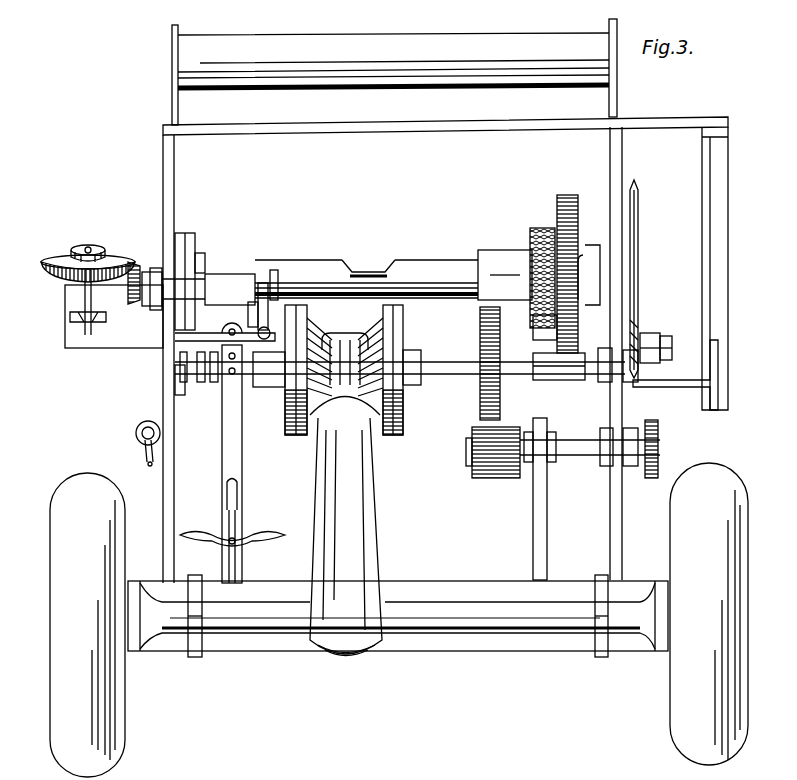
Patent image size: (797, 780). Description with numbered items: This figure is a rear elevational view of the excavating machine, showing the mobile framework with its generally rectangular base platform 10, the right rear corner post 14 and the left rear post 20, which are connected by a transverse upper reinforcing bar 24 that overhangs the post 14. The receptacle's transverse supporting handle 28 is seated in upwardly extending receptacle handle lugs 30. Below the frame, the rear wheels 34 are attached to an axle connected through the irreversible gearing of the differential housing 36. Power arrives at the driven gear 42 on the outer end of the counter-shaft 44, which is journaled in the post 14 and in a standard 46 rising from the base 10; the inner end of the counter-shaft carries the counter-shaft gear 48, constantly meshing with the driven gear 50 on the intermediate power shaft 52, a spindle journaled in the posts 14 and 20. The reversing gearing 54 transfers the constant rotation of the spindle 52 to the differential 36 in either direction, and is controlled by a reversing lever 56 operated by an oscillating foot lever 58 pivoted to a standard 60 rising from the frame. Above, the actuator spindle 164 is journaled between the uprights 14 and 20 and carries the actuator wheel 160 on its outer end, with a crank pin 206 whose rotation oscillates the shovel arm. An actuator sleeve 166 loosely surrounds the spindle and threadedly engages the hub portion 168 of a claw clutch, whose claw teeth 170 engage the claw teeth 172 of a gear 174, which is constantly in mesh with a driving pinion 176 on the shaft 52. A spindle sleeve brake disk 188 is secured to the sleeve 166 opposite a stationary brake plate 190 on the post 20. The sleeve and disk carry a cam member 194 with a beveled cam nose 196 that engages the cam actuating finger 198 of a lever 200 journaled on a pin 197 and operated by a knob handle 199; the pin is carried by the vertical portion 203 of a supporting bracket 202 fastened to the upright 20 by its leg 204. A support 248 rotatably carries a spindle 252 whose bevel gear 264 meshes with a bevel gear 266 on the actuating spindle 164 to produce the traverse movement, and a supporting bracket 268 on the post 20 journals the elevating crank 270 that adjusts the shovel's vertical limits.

The base platform 10 is at (565, 640).
The rear corner post 14 is at (622, 162).
The rear post 20 is at (175, 178).
The transverse upper reinforcing bar 24 is at (666, 121).
The transverse supporting handle 28 is at (348, 48).
The receptacle handle lugs 30 is at (172, 102).
The rear wheels 34 is at (716, 478).
The differential housing 36 is at (355, 652).
The driven gear 42 is at (660, 442).
The counter-shaft 44 is at (573, 460).
The standard 46 is at (535, 500).
The counter-shaft gear 48 is at (488, 470).
The driven gear 50 is at (480, 405).
The intermediate power shaft 52 is at (452, 360).
The reversing gearing 54 is at (305, 438).
The reversing lever 56 is at (228, 420).
The oscillating foot lever 58 is at (250, 530).
The standard 60 is at (238, 560).
The actuator wheel 160 is at (640, 236).
The actuator spindle 164 is at (366, 275).
The actuator sleeve 166 is at (320, 262).
The hub portion 168 is at (483, 268).
The claw teeth 170 is at (538, 240).
The claw teeth 172 is at (552, 325).
The gear 174 is at (558, 206).
The driving pinion 176 is at (560, 381).
The spindle sleeve brake disk 188 is at (198, 250).
The stationary brake plate 190 is at (181, 233).
The cam member 194 is at (216, 272).
The cam nose 196 is at (200, 290).
The pin 197 is at (276, 270).
The cam actuating finger 198 is at (252, 270).
The knob handle 199 is at (262, 330).
The lever 200 is at (270, 290).
The supporting bracket 202 is at (187, 344).
The vertical portion 203 is at (302, 315).
The leg 204 is at (175, 385).
The crank pin 206 is at (648, 345).
The support 248 is at (72, 335).
The spindle 252 is at (84, 318).
The bevel gear 264 is at (58, 262).
The bevel gear 266 is at (136, 262).
The supporting bracket 268 is at (136, 435).
The elevating crank 270 is at (146, 455).